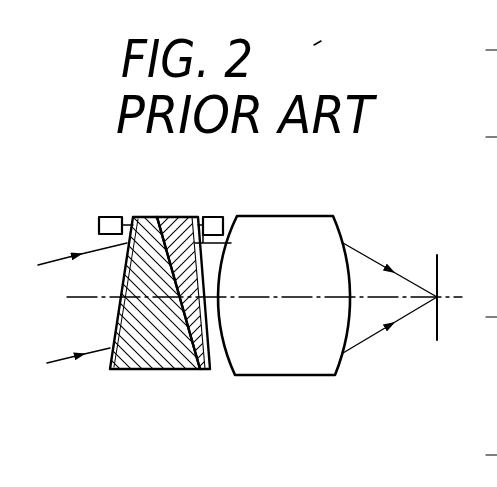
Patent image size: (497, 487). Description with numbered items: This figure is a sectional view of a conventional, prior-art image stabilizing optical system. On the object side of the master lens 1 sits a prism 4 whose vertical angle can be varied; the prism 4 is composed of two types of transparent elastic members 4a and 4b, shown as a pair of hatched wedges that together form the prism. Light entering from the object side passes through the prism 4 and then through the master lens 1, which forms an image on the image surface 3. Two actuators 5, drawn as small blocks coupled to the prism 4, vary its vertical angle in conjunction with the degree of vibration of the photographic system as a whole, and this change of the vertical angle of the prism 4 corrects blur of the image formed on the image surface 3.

The master lens 1 is at (290, 362).
The image surface 3 is at (436, 262).
The prism 4 is at (176, 315).
The transparent elastic member 4a is at (160, 357).
The transparent elastic member 4b is at (142, 417).
The actuators 5 is at (113, 217).